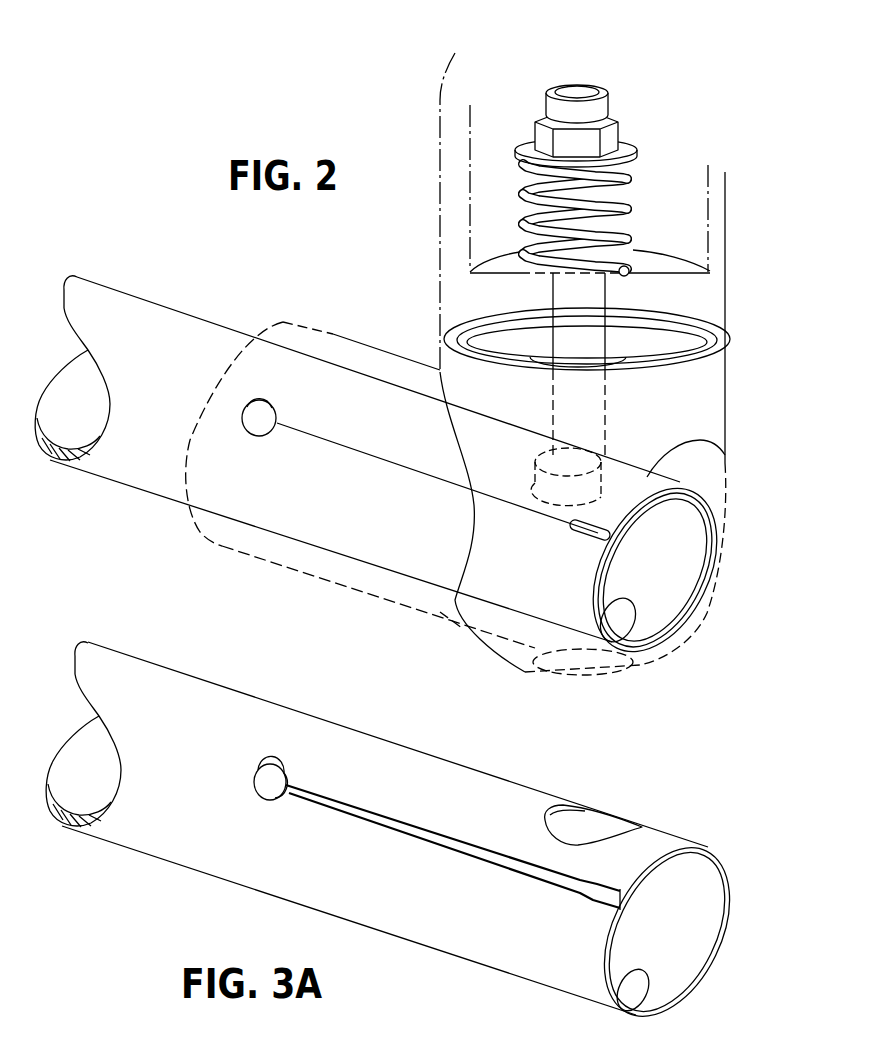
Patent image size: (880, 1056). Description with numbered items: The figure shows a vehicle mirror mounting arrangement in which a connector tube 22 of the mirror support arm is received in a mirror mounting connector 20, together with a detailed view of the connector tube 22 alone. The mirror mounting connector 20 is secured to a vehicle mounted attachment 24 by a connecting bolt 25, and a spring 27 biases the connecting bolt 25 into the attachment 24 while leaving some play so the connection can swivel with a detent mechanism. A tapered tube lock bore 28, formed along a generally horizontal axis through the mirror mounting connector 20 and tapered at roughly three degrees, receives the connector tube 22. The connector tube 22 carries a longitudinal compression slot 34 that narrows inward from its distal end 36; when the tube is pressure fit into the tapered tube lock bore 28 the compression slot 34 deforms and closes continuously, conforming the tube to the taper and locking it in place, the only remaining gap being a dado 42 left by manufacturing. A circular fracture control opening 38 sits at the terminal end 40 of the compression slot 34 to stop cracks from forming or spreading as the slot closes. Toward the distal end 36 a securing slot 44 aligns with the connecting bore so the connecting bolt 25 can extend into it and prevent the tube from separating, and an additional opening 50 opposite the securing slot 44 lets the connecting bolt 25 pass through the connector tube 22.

In FIG. 2, the mirror mounting connector 20 is at (446, 360).
In FIG. 2, the connector tube 22 is at (216, 330).
In FIG. 3A, the connector tube 22 is at (170, 692).
In FIG. 2, the vehicle mounted attachment 24 is at (452, 258).
In FIG. 2, the connecting bolt 25 is at (548, 524).
In FIG. 2, the spring 27 is at (615, 200).
In FIG. 2, the tube lock bore 28 is at (663, 600).
In FIG. 2, the compression slot 34 is at (400, 470).
In FIG. 3A, the compression slot 34 is at (472, 845).
In FIG. 2, the distal end 36 is at (658, 637).
In FIG. 3A, the distal end 36 is at (730, 920).
In FIG. 3A, the fracture control opening 38 is at (257, 780).
In FIG. 3A, the terminal end 40 is at (292, 783).
In FIG. 3A, the dado 42 is at (601, 908).
In FIG. 3A, the securing slot 44 is at (577, 834).
In FIG. 3A, the additional opening 50 is at (645, 992).